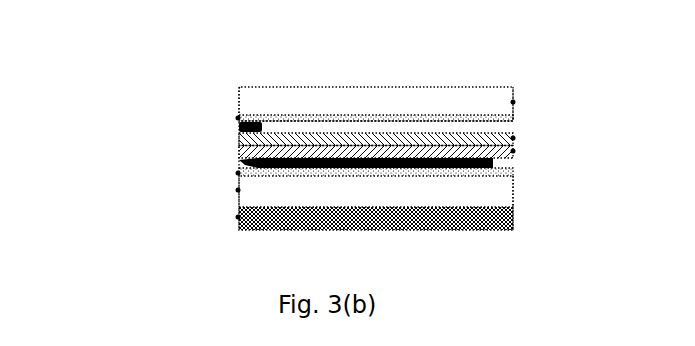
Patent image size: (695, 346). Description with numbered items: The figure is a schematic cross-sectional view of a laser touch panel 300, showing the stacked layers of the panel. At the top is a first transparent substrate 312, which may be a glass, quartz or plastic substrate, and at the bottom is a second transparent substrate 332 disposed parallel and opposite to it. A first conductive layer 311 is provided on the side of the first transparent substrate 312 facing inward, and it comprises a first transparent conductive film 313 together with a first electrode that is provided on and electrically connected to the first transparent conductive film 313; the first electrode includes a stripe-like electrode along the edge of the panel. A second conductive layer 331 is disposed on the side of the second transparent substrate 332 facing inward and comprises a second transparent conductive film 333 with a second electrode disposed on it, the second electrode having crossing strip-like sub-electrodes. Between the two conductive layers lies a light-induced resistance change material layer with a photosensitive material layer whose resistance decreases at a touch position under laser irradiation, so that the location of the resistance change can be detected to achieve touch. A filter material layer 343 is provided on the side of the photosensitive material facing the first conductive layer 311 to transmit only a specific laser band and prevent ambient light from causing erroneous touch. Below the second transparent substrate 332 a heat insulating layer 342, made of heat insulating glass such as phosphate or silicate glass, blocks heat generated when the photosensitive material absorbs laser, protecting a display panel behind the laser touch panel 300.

The laser touch panel 300 is at (513, 46).
The first conductive layer 311 is at (82, 68).
The first transparent substrate 312 is at (513, 102).
The first transparent conductive film 313 is at (238, 118).
The second conductive layer 331 is at (73, 145).
The second transparent conductive film 333 is at (238, 173).
The second transparent substrate 332 is at (238, 190).
The heat insulating layer 342 is at (238, 217).
The filter material layer 343 is at (513, 138).